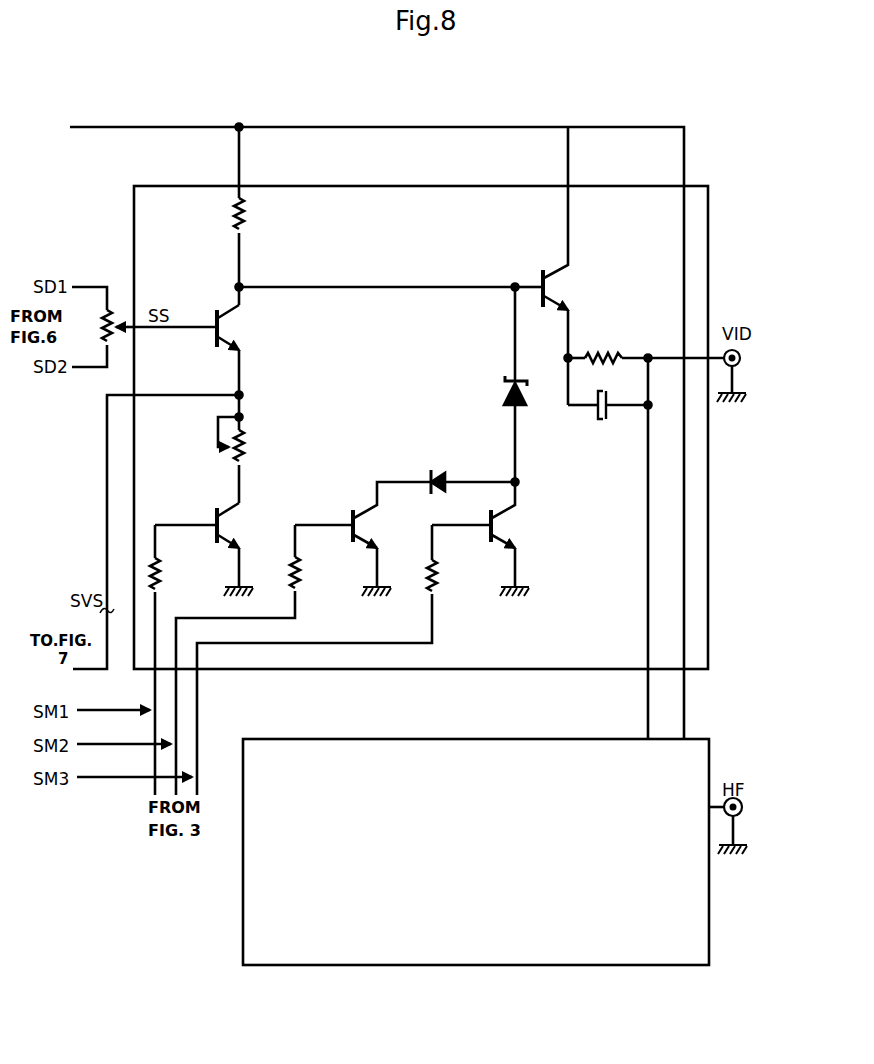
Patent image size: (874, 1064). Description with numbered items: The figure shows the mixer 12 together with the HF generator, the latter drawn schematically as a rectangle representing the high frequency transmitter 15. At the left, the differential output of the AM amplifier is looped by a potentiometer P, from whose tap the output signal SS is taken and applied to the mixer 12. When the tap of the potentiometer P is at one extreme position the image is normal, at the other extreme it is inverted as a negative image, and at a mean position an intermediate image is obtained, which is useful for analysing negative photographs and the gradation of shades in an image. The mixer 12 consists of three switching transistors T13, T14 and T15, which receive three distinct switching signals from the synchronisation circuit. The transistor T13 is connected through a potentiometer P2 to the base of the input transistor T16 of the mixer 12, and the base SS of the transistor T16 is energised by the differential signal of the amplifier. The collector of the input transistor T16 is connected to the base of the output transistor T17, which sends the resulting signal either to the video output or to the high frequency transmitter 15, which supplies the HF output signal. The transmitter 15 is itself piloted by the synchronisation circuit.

The mixer 12 is at (700, 236).
The high frequency transmitter 15 is at (685, 918).
The switching transistor T13 is at (216, 549).
The switching transistor T14 is at (362, 539).
The switching transistor T15 is at (493, 539).
The input transistor T16 is at (206, 327).
The output transistor T17 is at (561, 266).
The potentiometer P is at (103, 327).
The potentiometer P2 is at (243, 444).